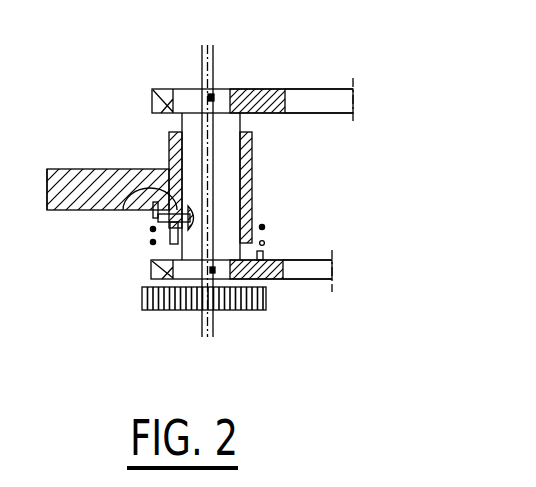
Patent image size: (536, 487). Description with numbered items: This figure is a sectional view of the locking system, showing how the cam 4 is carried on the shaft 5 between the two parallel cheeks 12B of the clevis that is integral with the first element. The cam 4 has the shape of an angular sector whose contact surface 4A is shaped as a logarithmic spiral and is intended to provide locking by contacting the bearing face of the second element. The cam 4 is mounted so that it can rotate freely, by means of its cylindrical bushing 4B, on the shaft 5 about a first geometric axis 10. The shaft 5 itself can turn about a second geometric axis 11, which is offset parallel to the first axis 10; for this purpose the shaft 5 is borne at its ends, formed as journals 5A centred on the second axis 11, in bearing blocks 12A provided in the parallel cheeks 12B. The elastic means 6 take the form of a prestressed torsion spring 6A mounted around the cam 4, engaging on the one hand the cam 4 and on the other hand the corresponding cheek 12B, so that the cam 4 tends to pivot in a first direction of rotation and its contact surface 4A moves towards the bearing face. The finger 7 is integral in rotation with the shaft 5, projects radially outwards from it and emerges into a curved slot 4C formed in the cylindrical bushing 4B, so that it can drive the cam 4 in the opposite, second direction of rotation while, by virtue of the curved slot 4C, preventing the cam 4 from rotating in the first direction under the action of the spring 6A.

The cam 4 is at (80, 180).
The contact surface 4A is at (47, 197).
The cylindrical bushing 4B is at (168, 145).
The curved slot 4C is at (170, 245).
The shaft 5 is at (226, 170).
The journals 5A is at (187, 98).
The elastic means 6 is at (141, 242).
The prestressed torsion spring 6A is at (265, 227).
The finger 7 is at (128, 208).
The first geometric axis 10 is at (213, 67).
The second geometric axis 11 is at (202, 62).
The bearing blocks 12A is at (259, 86).
The parallel cheeks 12B is at (331, 259).